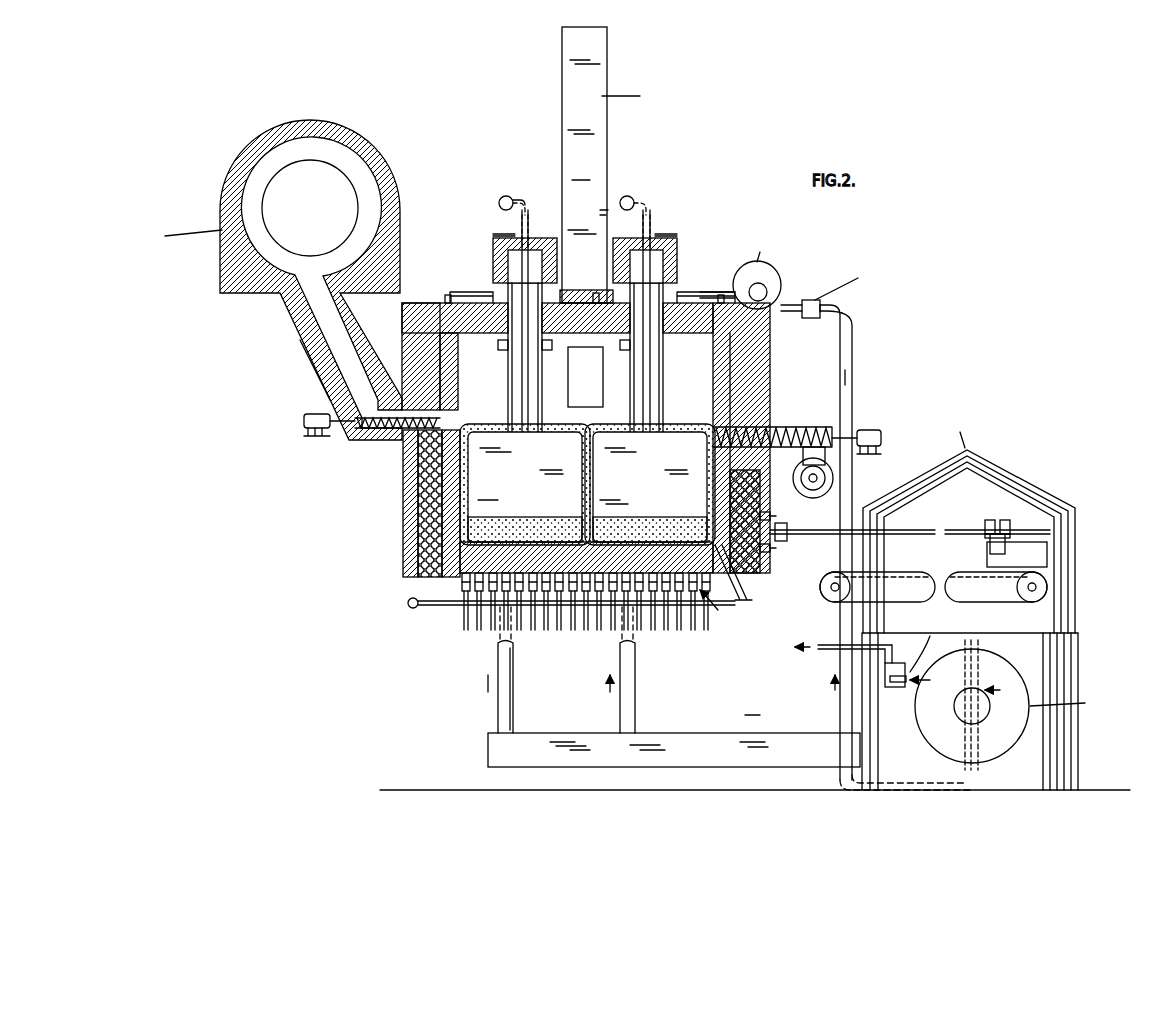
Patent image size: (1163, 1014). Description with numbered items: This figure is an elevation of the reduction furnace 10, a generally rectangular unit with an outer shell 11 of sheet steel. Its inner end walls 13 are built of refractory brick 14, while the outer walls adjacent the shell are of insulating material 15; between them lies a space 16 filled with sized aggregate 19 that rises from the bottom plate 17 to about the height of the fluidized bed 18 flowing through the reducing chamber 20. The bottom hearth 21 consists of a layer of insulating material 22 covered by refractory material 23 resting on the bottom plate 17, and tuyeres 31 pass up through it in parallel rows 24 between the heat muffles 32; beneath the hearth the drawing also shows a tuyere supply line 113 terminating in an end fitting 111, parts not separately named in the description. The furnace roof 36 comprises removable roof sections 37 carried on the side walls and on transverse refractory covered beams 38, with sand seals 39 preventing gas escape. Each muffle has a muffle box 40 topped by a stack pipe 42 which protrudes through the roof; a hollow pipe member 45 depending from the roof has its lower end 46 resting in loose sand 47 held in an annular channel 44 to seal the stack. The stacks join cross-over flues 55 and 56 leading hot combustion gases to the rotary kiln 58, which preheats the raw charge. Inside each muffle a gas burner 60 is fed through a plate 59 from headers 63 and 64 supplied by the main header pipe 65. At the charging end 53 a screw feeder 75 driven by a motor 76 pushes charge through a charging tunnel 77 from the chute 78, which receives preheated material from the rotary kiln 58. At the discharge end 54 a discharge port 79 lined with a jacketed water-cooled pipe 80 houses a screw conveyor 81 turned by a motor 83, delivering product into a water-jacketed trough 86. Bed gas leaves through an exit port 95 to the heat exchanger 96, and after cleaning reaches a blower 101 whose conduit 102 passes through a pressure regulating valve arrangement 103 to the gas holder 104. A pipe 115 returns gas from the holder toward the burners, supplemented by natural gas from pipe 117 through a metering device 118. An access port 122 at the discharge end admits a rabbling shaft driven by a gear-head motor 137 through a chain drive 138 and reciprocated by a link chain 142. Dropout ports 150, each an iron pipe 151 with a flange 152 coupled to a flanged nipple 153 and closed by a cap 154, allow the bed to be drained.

The reduction furnace 10 is at (400, 485).
The outer shell 11 is at (403, 325).
The end walls 13 is at (458, 380).
The refractory brick 14 is at (458, 398).
The insulating material 15 is at (403, 345).
The space 16 is at (418, 540).
The bottom plate 17 is at (428, 575).
The fluidized bed 18 is at (588, 440).
The sized aggregate 19 is at (442, 515).
The furnace reducing chamber 20 is at (500, 418).
The bottom hearth 21 is at (460, 608).
The insulating material layer 22 is at (486, 625).
The refractory material 23 is at (665, 540).
The parallel rows 24 is at (548, 540).
The tuyeres 31 is at (418, 568).
The heat muffles 32 is at (555, 433).
The furnace roof 36 is at (462, 292).
The roof sections 37 is at (478, 333).
The transverse refractory covered beams 38 is at (575, 290).
The sand seals 39 is at (445, 298).
The muffle box 40 is at (498, 493).
The pipe 42 is at (542, 393).
The annular channel 44 is at (552, 348).
The hollow pipe member 45 is at (480, 298).
The lower end 46 is at (548, 350).
The loose sand 47 is at (503, 350).
The charging end 53 is at (412, 455).
The discharge end 54 is at (760, 395).
The cross-over flue 55 is at (540, 245).
The cross-over flue 56 is at (660, 245).
The rotary kiln 58 is at (247, 185).
The plate 59 is at (510, 234).
The gas burner 60 is at (530, 458).
The header 63 is at (507, 195).
The header 64 is at (628, 195).
The main header pipe 65 is at (677, 733).
The screw feeder 75 is at (360, 417).
The motor 76 is at (302, 422).
The charging tunnel 77 is at (363, 432).
The feed hopper or chute 78 is at (325, 350).
The discharge port 79 is at (760, 412).
The jacketed water-cooled pipe 80 is at (800, 427).
The screw conveyor 81 is at (803, 458).
The motor 83 is at (876, 429).
The water-jacketed trough 86 is at (813, 490).
The bed gas exit port 95 is at (596, 390).
The heat exchanger 96 is at (600, 136).
The blower 101 is at (775, 275).
The conduit 102 is at (853, 347).
The pressure regulating valve arrangement 103 is at (812, 300).
The gas holder 104 is at (1020, 478).
The pipe end 111 is at (410, 608).
The air supply pipe 113 is at (430, 606).
The pipe 115 is at (900, 780).
The pipe 117 is at (892, 655).
The metering device 118 is at (896, 687).
The access port 122 is at (788, 540).
The gear in head motor 137 is at (1047, 560).
The chain drive 138 is at (985, 545).
The link chain 142 is at (1003, 602).
The dropout ports 150 is at (712, 598).
The iron pipe 151 is at (765, 563).
The flange 152 is at (725, 578).
The flanged nipple 153 is at (735, 612).
The cap 154 is at (742, 598).